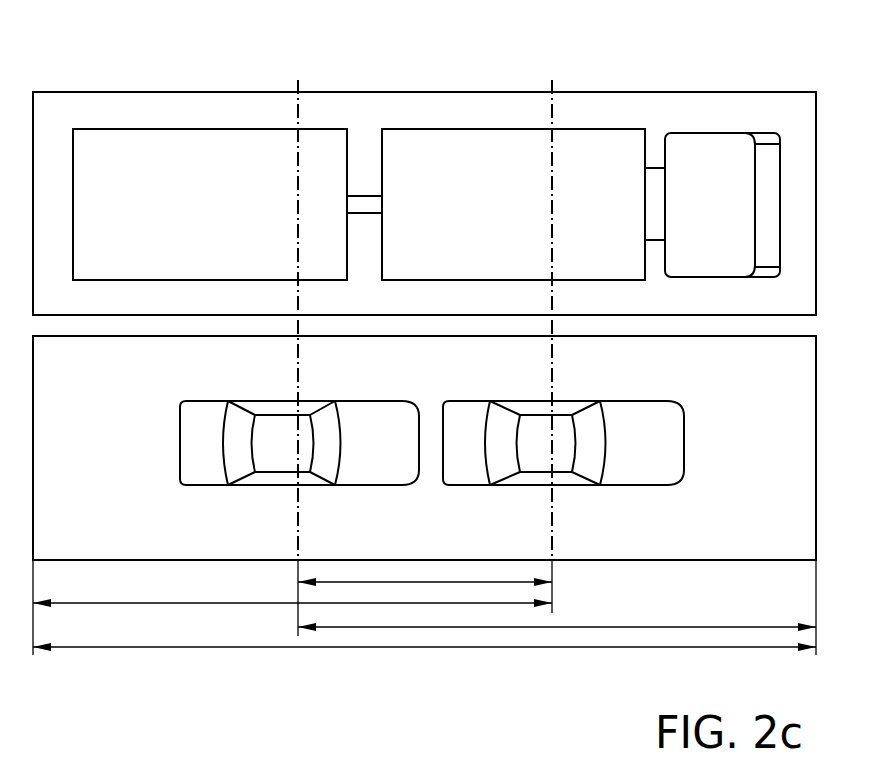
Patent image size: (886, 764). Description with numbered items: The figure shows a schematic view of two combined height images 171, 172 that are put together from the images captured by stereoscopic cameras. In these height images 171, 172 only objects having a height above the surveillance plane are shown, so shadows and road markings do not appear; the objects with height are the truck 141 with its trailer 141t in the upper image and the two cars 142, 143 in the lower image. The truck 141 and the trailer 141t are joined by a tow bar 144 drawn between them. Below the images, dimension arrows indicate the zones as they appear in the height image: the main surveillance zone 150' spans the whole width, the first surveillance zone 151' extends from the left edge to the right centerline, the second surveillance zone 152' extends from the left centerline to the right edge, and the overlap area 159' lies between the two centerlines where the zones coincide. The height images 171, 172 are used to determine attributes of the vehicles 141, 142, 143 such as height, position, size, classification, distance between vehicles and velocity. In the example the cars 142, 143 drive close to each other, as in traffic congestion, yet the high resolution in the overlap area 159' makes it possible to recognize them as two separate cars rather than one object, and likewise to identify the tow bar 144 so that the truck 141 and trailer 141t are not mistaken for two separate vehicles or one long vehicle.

The combined height image 171 is at (95, 75).
The combined height image 172 is at (113, 578).
The truck 141 is at (722, 146).
The trailer 141t is at (222, 145).
The tow bar 144 is at (368, 205).
The car 142 is at (238, 487).
The car 143 is at (652, 487).
The main surveillance zone 150' is at (424, 675).
The first surveillance zone 151' is at (292, 654).
The second surveillance zone 152' is at (557, 665).
The overlap area 159' is at (425, 643).